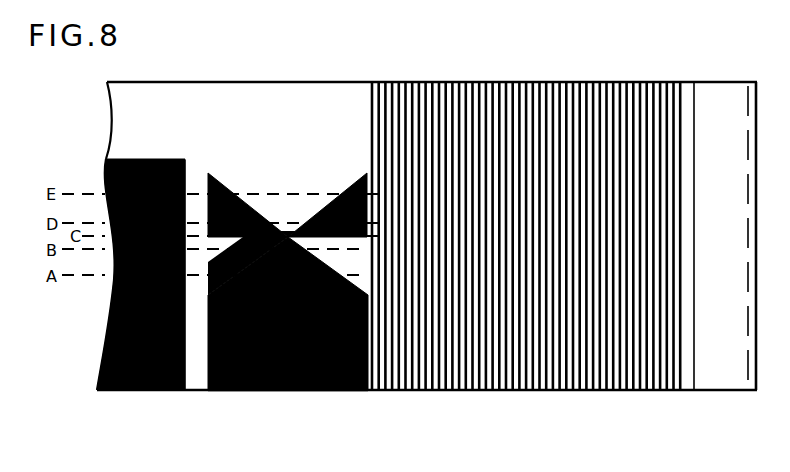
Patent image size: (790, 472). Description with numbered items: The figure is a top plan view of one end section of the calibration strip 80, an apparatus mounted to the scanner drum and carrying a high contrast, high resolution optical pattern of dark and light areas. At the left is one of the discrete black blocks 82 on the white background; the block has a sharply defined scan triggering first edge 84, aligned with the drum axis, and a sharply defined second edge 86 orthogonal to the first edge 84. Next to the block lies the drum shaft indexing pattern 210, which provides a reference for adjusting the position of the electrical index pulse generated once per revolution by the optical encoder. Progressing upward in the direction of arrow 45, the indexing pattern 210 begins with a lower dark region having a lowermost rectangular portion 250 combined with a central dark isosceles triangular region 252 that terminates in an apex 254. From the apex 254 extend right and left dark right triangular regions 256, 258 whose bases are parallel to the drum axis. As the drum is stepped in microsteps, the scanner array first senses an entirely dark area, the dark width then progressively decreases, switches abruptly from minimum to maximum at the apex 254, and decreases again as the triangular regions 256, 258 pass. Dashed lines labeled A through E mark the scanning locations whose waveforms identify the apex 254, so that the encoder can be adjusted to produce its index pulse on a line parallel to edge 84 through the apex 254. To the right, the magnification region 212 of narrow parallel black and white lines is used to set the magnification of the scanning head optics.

The calibration strip 80 is at (229, 82).
The black regions or blocks 82 is at (105, 322).
The scan triggering first edges 84 is at (147, 159).
The second edges 86 is at (187, 368).
The arrow 45 is at (272, 163).
The lowermost rectangular portion 250 is at (248, 391).
The central dark isosceles triangular region 252 is at (252, 264).
The apex 254 is at (288, 236).
The right dark right triangular region 256 is at (346, 190).
The left dark right triangular region 258 is at (229, 190).
The drum shaft indexing pattern 210 is at (283, 391).
The magnification region 212 is at (482, 391).